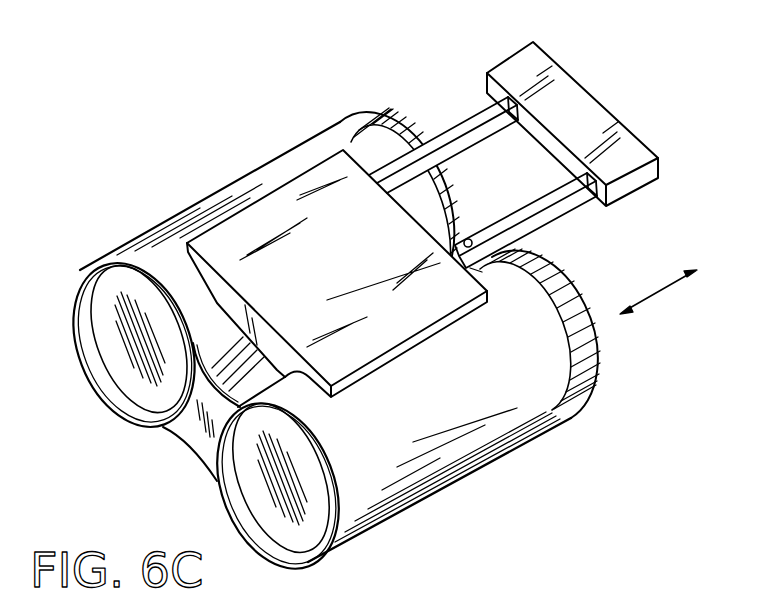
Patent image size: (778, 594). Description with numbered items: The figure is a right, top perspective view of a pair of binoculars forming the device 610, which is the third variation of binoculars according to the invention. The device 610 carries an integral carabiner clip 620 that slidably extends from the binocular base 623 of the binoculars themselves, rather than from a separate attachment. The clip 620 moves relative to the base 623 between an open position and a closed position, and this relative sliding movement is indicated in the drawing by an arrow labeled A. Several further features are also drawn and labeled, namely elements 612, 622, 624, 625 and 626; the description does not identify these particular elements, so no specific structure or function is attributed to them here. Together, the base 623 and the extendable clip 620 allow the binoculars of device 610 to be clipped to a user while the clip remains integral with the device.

The binoculars device 610 is at (226, 149).
The housing 612 is at (457, 402).
The carabiner clip 620 is at (518, 8).
The rail 622 is at (573, 200).
The binocular base 623 is at (355, 276).
The guide rail 624 is at (517, 213).
The pin 625 is at (474, 242).
The handle bar 626 is at (550, 142).